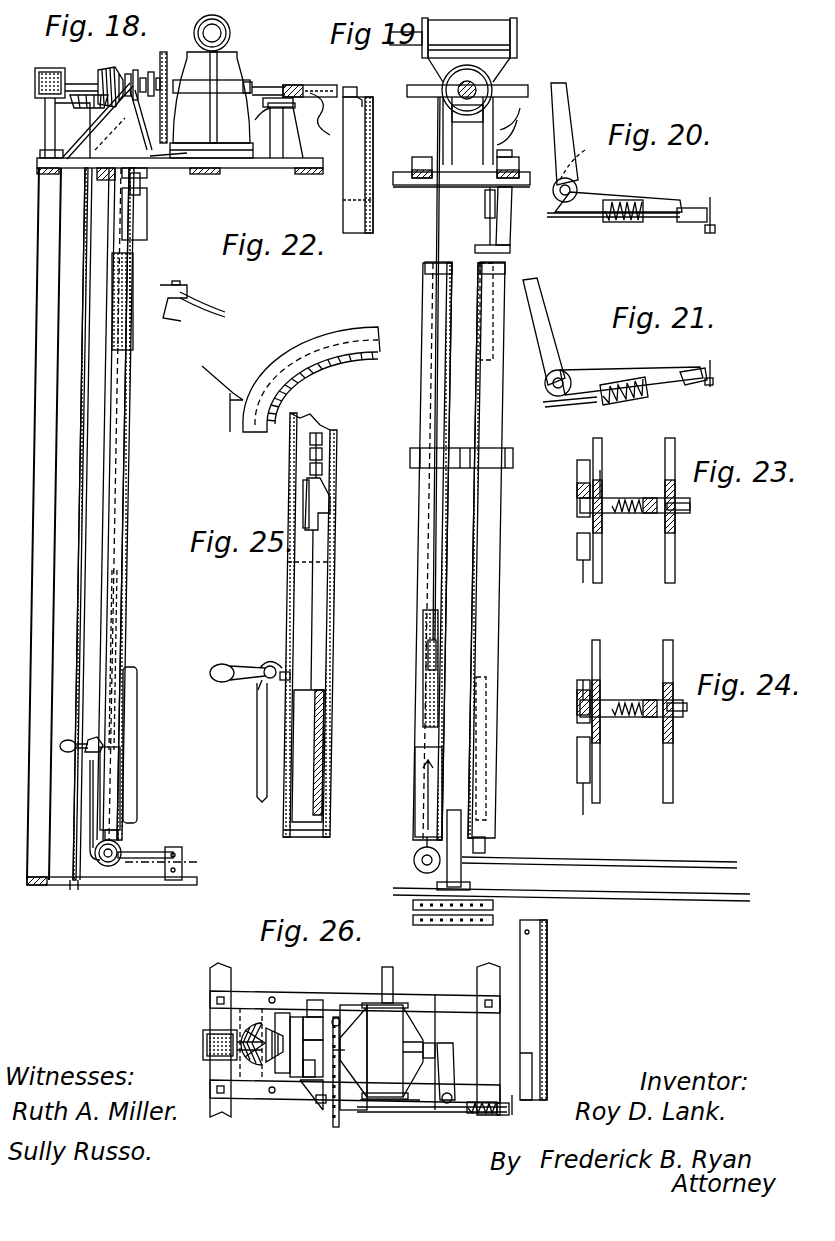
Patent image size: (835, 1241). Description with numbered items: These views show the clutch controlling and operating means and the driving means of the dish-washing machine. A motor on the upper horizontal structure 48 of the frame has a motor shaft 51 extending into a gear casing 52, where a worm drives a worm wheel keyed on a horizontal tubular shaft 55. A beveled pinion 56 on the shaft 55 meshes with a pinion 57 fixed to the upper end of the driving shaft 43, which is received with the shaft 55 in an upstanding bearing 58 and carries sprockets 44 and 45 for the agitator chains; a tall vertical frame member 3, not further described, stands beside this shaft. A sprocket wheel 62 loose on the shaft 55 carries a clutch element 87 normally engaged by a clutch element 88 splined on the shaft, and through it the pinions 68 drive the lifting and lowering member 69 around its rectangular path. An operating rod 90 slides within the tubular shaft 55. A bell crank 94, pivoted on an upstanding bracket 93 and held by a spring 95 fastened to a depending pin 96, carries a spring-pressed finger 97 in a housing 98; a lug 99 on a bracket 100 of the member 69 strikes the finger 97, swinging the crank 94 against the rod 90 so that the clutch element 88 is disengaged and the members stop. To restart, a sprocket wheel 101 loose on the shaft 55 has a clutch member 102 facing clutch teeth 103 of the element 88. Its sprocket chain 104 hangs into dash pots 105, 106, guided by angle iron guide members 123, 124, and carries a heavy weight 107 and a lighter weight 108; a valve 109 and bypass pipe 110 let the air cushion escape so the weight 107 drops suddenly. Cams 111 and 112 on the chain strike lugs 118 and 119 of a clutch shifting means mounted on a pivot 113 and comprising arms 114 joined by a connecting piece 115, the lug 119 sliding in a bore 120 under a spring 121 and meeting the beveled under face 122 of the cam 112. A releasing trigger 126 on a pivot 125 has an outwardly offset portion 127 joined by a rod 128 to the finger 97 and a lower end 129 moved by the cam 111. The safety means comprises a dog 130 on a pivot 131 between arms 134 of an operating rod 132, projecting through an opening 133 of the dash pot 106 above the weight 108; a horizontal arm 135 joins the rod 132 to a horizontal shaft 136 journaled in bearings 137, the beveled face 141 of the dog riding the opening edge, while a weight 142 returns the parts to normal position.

In FIG. 18, the frame 3 is at (34, 421).
In FIG. 18, the driving shaft 43 is at (87, 409).
In FIG. 19, the driving shaft 43 is at (462, 870).
In FIG. 19, the sprocket 44 is at (413, 905).
In FIG. 19, the sprocket 45 is at (413, 920).
In FIG. 18, the upper horizontal structure of the frame 48 is at (250, 170).
In FIG. 26, the upper horizontal structure of the frame 48 is at (210, 995).
In FIG. 18, the motor shaft 51 is at (222, 30).
In FIG. 19, the motor shaft 51 is at (415, 45).
In FIG. 26, the motor shaft 51 is at (393, 975).
In FIG. 18, the gear casing 52 is at (233, 40).
In FIG. 19, the gear casing 52 is at (512, 32).
In FIG. 26, the gear casing 52 is at (385, 1030).
In FIG. 18, the horizontal tubular shaft 55 is at (76, 84).
In FIG. 26, the horizontal tubular shaft 55 is at (240, 1042).
In FIG. 18, the beveled pinion 56 is at (112, 68).
In FIG. 26, the beveled pinion 56 is at (250, 1060).
In FIG. 18, the pinion 57 is at (72, 101).
In FIG. 26, the pinion 57 is at (255, 1058).
In FIG. 18, the upstanding bearing 58 is at (50, 70).
In FIG. 26, the upstanding bearing 58 is at (203, 1047).
In FIG. 18, the sprocket wheel 62 is at (167, 60).
In FIG. 26, the pinions 68 is at (353, 1052).
In FIG. 19, the lifting and lowering member 69 is at (368, 142).
In FIG. 22, the lifting and lowering member 69 is at (346, 327).
In FIG. 26, the lifting and lowering member 69 is at (547, 1000).
In FIG. 18, the clutch element 87 is at (158, 78).
In FIG. 18, the clutch element 88 is at (152, 72).
In FIG. 18, the operating rod 90 is at (283, 85).
In FIG. 26, the operating rod 90 is at (432, 1043).
In FIG. 18, the upstanding bracket 93 is at (270, 143).
In FIG. 20, the upstanding bracket 93 is at (553, 195).
In FIG. 21, the upstanding bracket 93 is at (550, 392).
In FIG. 20, the bell crank 94 is at (605, 190).
In FIG. 21, the bell crank 94 is at (557, 363).
In FIG. 26, the bell crank 94 is at (450, 1095).
In FIG. 18, the spring 95 is at (290, 105).
In FIG. 20, the spring 95 is at (577, 157).
In FIG. 18, the depending pin 96 is at (326, 135).
In FIG. 20, the depending pin 96 is at (595, 215).
In FIG. 18, the spring-pressed finger 97 is at (325, 115).
In FIG. 20, the spring-pressed finger 97 is at (690, 222).
In FIG. 21, the spring-pressed finger 97 is at (695, 384).
In FIG. 26, the spring-pressed finger 97 is at (505, 1115).
In FIG. 18, the housing 98 is at (310, 81).
In FIG. 20, the housing 98 is at (640, 223).
In FIG. 21, the housing 98 is at (640, 400).
In FIG. 26, the housing 98 is at (475, 1113).
In FIG. 19, the projection or lug 99 is at (350, 87).
In FIG. 20, the projection or lug 99 is at (712, 233).
In FIG. 21, the projection or lug 99 is at (712, 387).
In FIG. 22, the projection or lug 99 is at (187, 292).
In FIG. 26, the projection or lug 99 is at (510, 1108).
In FIG. 19, the bracket 100 is at (362, 102).
In FIG. 22, the bracket 100 is at (226, 314).
In FIG. 26, the bracket 100 is at (532, 1060).
In FIG. 18, the sprocket wheel 101 is at (128, 74).
In FIG. 19, the sprocket wheel 101 is at (492, 82).
In FIG. 26, the sprocket wheel 101 is at (292, 1060).
In FIG. 18, the clutch member 102 is at (136, 70).
In FIG. 18, the clutch teeth 103 is at (144, 78).
In FIG. 26, the clutch teeth 103 is at (305, 1077).
In FIG. 19, the sprocket chain 104 is at (436, 228).
In FIG. 25, the sprocket chain 104 is at (322, 452).
In FIG. 18, the dash pot 105 is at (126, 452).
In FIG. 19, the dash pot 105 is at (500, 492).
In FIG. 19, the dash pot 106 is at (421, 393).
In FIG. 25, the dash pot 106 is at (333, 575).
In FIG. 18, the weight 107 is at (133, 335).
In FIG. 19, the weight 107 is at (493, 358).
In FIG. 18, the weight 108 is at (120, 770).
In FIG. 19, the weight 108 is at (415, 777).
In FIG. 25, the weight 108 is at (326, 710).
In FIG. 18, the valve 109 is at (118, 835).
In FIG. 19, the valve 109 is at (486, 845).
In FIG. 18, the bypass pipe 110 is at (137, 780).
In FIG. 19, the bypass pipe 110 is at (488, 782).
In FIG. 18, the cam or projection 111 is at (122, 112).
In FIG. 18, the projection or cam 112 is at (117, 660).
In FIG. 19, the projection or cam 112 is at (428, 665).
In FIG. 23, the projection or cam 112 is at (577, 545).
In FIG. 24, the projection or cam 112 is at (577, 740).
In FIG. 25, the projection or cam 112 is at (303, 490).
In FIG. 19, the pivot 113 is at (412, 162).
In FIG. 26, the pivot 113 is at (316, 1000).
In FIG. 18, the arms 114 is at (183, 155).
In FIG. 19, the arms 114 is at (428, 97).
In FIG. 23, the arms 114 is at (665, 575).
In FIG. 24, the arms 114 is at (663, 650).
In FIG. 26, the arms 114 is at (385, 1100).
In FIG. 19, the connecting piece 115 is at (468, 122).
In FIG. 23, the connecting piece 115 is at (626, 498).
In FIG. 24, the connecting piece 115 is at (640, 700).
In FIG. 23, the lug 118 is at (690, 507).
In FIG. 24, the lug 118 is at (688, 710).
In FIG. 26, the lug 118 is at (345, 1050).
In FIG. 18, the lug 119 is at (142, 120).
In FIG. 23, the lug 119 is at (605, 495).
In FIG. 24, the lug 119 is at (582, 696).
In FIG. 26, the lug 119 is at (338, 1010).
In FIG. 23, the bore 120 is at (615, 513).
In FIG. 24, the bore 120 is at (630, 717).
In FIG. 23, the spring 121 is at (648, 513).
In FIG. 24, the spring 121 is at (645, 700).
In FIG. 23, the beveled under face 122 is at (577, 493).
In FIG. 24, the beveled under face 122 is at (577, 705).
In FIG. 25, the beveled under face 122 is at (332, 495).
In FIG. 18, the angle iron guide member 123 is at (147, 222).
In FIG. 19, the angle iron guide member 123 is at (508, 218).
In FIG. 26, the angle iron guide member 123 is at (308, 1080).
In FIG. 26, the angle iron guide member 124 is at (283, 1013).
In FIG. 18, the pivot 125 is at (148, 176).
In FIG. 19, the pivot 125 is at (512, 156).
In FIG. 26, the pivot 125 is at (312, 1100).
In FIG. 18, the releasing trigger 126 is at (125, 130).
In FIG. 19, the outwardly offset portion 127 is at (510, 130).
In FIG. 26, the outwardly offset portion 127 is at (322, 1100).
In FIG. 18, the rod 128 is at (258, 120).
In FIG. 19, the rod 128 is at (518, 126).
In FIG. 20, the rod 128 is at (575, 218).
In FIG. 21, the rod 128 is at (570, 404).
In FIG. 26, the rod 128 is at (425, 1112).
In FIG. 18, the lower end 129 is at (140, 193).
In FIG. 19, the lower end 129 is at (485, 203).
In FIG. 18, the dog 130 is at (76, 746).
In FIG. 25, the dog 130 is at (226, 663).
In FIG. 25, the pivot 131 is at (258, 685).
In FIG. 18, the operating rod 132 is at (90, 855).
In FIG. 19, the operating rod 132 is at (421, 838).
In FIG. 25, the operating rod 132 is at (257, 733).
In FIG. 25, the opening 133 is at (313, 665).
In FIG. 25, the arms 134 is at (268, 666).
In FIG. 18, the horizontal arm 135 is at (150, 858).
In FIG. 18, the horizontal shaft 136 is at (188, 858).
In FIG. 19, the horizontal shaft 136 is at (592, 859).
In FIG. 18, the bearings 137 is at (182, 850).
In FIG. 19, the bearings 137 is at (440, 868).
In FIG. 18, the beveled face 141 is at (100, 745).
In FIG. 25, the beveled face 141 is at (290, 676).
In FIG. 18, the weight 142 is at (110, 866).
In FIG. 19, the weight 142 is at (414, 858).